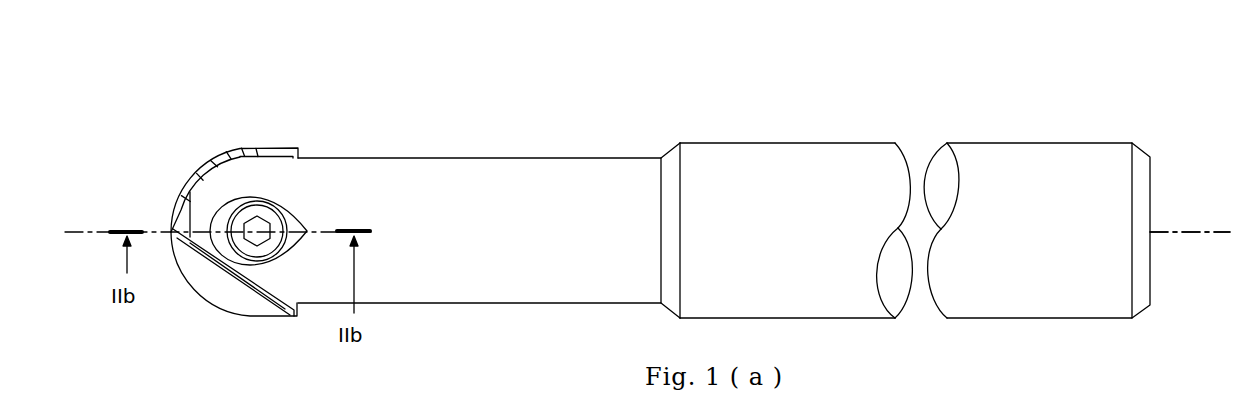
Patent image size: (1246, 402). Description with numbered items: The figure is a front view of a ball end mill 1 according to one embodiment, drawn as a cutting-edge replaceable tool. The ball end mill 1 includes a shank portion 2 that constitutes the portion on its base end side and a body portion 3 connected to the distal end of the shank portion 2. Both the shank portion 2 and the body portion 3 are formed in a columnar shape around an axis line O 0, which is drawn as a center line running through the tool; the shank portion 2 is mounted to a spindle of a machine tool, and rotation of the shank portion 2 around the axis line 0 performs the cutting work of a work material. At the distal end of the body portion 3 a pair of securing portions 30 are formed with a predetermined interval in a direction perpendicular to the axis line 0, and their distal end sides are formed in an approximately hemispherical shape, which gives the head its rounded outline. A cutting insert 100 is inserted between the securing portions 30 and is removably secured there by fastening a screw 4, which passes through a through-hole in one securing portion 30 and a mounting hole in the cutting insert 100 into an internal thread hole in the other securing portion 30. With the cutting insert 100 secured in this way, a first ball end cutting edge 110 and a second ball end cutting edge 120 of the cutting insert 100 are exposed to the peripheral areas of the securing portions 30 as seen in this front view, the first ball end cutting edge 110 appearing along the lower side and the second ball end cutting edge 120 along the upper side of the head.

The axis line 0 is at (1212, 232).
The ball end mill 1 is at (875, 89).
The shank portion 2 is at (778, 162).
The body portion 3 is at (553, 172).
The screw 4 is at (266, 212).
The securing portion 30 is at (233, 172).
The cutting insert 100 is at (160, 312).
The first ball end cutting edge 110 is at (208, 302).
The second ball end cutting edge 120 is at (194, 168).